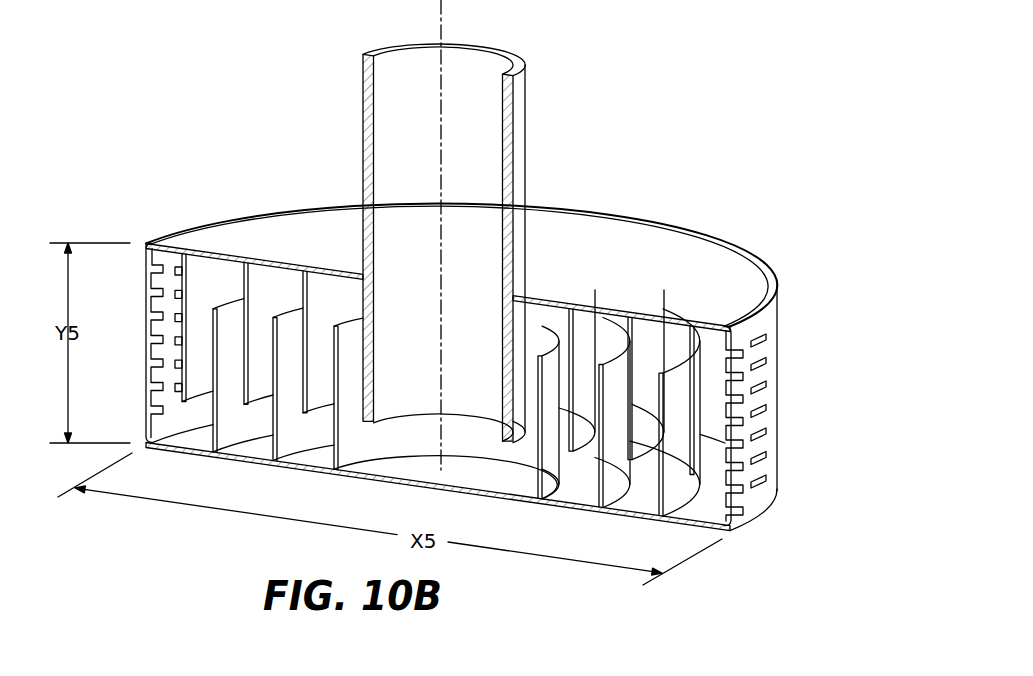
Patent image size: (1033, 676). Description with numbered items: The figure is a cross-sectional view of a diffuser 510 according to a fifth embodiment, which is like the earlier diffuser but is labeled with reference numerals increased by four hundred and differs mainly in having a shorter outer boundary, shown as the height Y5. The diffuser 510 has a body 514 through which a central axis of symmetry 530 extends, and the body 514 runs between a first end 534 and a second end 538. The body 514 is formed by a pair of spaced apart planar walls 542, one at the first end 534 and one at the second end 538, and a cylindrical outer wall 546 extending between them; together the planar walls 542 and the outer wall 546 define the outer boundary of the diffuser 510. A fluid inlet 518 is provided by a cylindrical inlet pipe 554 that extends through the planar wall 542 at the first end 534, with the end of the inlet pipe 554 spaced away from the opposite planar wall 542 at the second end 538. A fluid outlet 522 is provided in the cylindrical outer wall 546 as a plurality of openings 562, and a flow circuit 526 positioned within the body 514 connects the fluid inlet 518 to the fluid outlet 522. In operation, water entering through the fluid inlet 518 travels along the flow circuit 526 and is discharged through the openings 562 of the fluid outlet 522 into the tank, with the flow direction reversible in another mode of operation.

The diffuser 510 is at (624, 178).
The body 514 is at (763, 428).
The fluid inlet 518 is at (409, 393).
The fluid outlet 522 is at (808, 383).
The flow circuit 526 is at (705, 505).
The central axis of symmetry 530 is at (438, 162).
The first end 534 is at (752, 255).
The second end 538 is at (752, 520).
The planar walls 542 is at (688, 257).
The cylindrical outer wall 546 is at (772, 490).
The inlet pipe 554 is at (365, 173).
The openings 562 is at (773, 372).